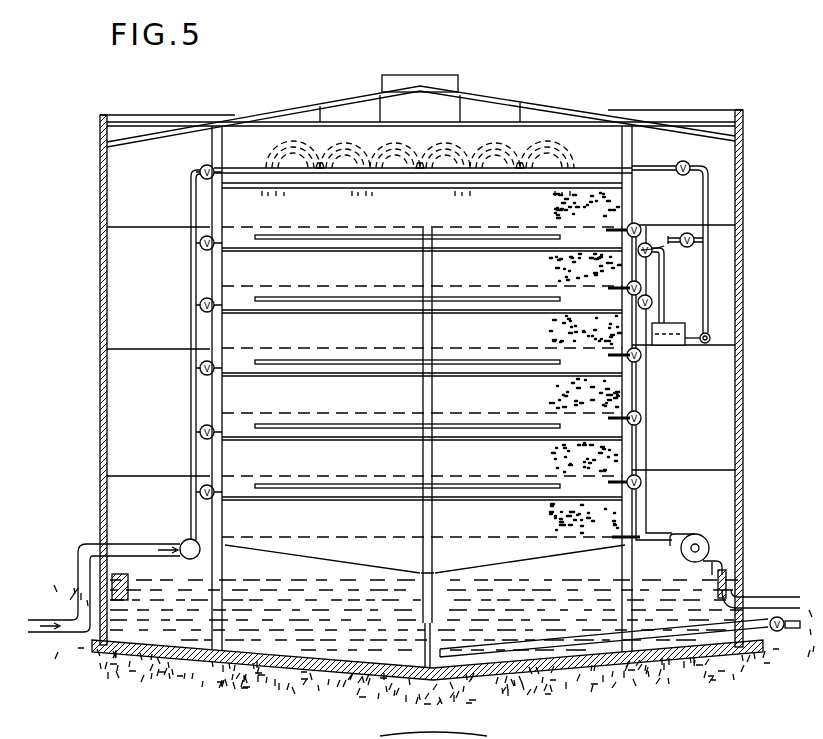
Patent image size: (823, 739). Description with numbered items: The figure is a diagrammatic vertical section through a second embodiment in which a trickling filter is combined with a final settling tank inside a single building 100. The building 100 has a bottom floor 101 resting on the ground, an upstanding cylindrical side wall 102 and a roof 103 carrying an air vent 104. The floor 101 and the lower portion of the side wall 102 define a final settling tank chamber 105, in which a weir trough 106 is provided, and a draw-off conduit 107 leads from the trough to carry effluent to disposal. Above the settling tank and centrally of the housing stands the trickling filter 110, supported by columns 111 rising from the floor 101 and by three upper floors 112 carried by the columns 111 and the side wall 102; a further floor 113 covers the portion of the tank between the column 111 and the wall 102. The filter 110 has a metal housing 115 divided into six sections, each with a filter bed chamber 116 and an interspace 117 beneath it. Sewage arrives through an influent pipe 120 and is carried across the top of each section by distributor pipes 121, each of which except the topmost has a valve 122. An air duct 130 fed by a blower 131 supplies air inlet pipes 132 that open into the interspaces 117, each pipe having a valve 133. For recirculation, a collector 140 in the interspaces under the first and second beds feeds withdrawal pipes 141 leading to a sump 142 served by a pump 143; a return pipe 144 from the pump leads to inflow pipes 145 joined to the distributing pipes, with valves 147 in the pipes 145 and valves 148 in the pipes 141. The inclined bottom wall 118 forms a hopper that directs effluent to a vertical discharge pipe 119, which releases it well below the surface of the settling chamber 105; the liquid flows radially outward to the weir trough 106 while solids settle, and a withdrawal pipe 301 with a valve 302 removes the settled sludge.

The building 100 is at (744, 196).
The bottom floor 101 is at (665, 655).
The side wall 102 is at (744, 332).
The roof 103 is at (560, 106).
The air vent 104 is at (448, 76).
The final settling tank chamber 105 is at (316, 638).
The weir trough 106 is at (732, 590).
The draw-off conduit 107 is at (790, 594).
The trickling filter 110 is at (628, 394).
The columns 111 is at (216, 405).
The upper floors 112 is at (118, 227).
The floor 113 is at (728, 566).
The housing 115 is at (222, 320).
The filter bed chamber 116 is at (608, 207).
The interspace 117 is at (606, 233).
The bottom wall 118 is at (275, 552).
The vertical discharge pipe 119 is at (435, 590).
The influent pipe 120 is at (136, 554).
The distributor pipes 121 is at (242, 168).
The valve 122 is at (203, 167).
The air duct 130 is at (648, 509).
The air blower 131 is at (706, 546).
The air inlet pipes 132 is at (638, 430).
The valve 133 is at (641, 485).
The collector 140 is at (465, 235).
The withdrawal pipes 141 is at (664, 292).
The sump 142 is at (670, 330).
The pump 143 is at (705, 345).
The return pipe 144 is at (710, 288).
The inflow pipes 145 is at (662, 166).
The valves 147 is at (692, 165).
The valves 148 is at (669, 257).
The withdrawal pipe 301 is at (553, 645).
The valve 302 is at (778, 636).